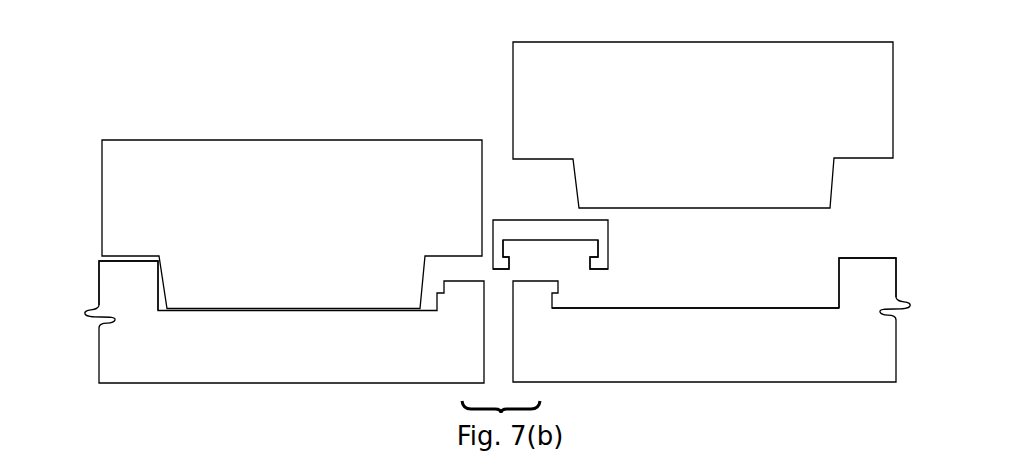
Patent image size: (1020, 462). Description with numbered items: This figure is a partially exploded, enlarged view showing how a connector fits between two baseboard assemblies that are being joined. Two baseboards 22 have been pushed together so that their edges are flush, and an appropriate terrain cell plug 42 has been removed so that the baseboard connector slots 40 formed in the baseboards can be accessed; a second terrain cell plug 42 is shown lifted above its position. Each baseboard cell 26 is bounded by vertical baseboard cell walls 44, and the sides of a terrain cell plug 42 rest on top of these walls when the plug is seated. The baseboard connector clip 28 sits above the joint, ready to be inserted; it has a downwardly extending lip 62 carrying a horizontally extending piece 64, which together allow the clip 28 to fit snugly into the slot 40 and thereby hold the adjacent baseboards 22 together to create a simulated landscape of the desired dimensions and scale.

The baseboard 22 is at (735, 367).
The baseboard cell 26 is at (675, 299).
The baseboard connector clip 28 is at (537, 219).
The baseboard connector slot 40 is at (292, 224).
The terrain cell plug 42 is at (703, 125).
The baseboard cell wall 44 is at (115, 285).
The downwardly extending lip 62 is at (505, 246).
The horizontally extending piece 64 is at (605, 260).